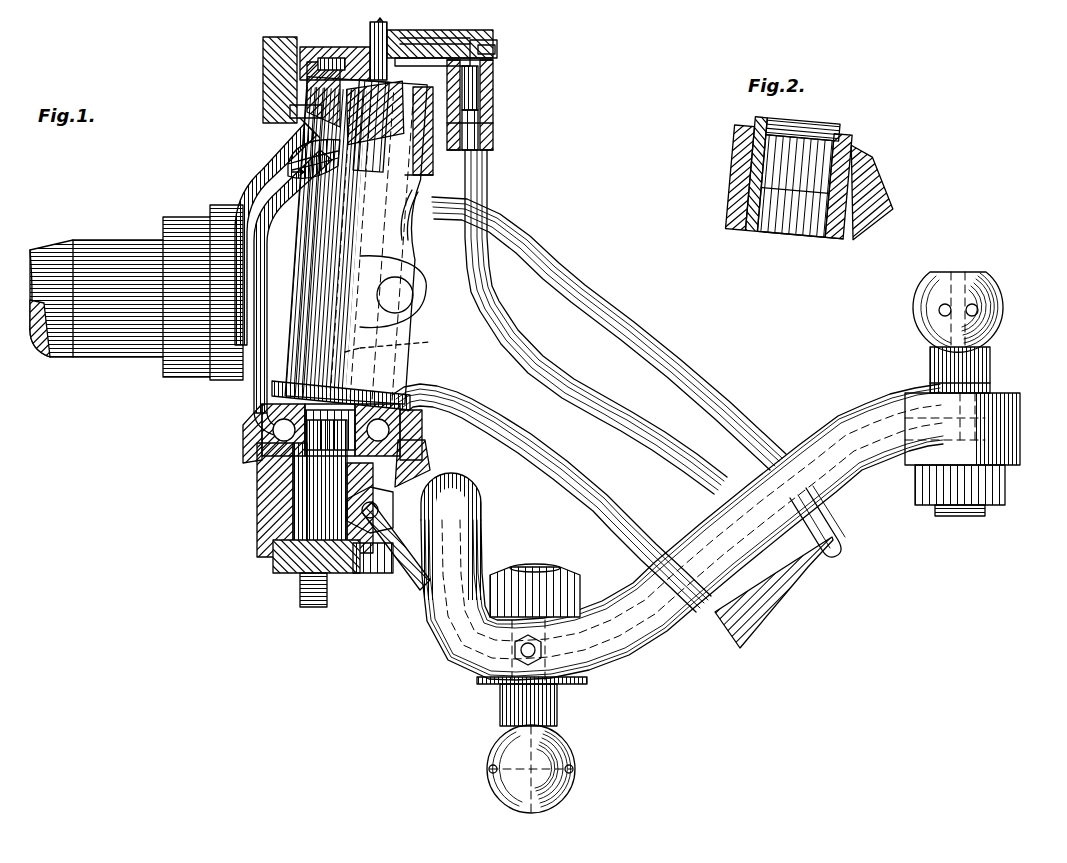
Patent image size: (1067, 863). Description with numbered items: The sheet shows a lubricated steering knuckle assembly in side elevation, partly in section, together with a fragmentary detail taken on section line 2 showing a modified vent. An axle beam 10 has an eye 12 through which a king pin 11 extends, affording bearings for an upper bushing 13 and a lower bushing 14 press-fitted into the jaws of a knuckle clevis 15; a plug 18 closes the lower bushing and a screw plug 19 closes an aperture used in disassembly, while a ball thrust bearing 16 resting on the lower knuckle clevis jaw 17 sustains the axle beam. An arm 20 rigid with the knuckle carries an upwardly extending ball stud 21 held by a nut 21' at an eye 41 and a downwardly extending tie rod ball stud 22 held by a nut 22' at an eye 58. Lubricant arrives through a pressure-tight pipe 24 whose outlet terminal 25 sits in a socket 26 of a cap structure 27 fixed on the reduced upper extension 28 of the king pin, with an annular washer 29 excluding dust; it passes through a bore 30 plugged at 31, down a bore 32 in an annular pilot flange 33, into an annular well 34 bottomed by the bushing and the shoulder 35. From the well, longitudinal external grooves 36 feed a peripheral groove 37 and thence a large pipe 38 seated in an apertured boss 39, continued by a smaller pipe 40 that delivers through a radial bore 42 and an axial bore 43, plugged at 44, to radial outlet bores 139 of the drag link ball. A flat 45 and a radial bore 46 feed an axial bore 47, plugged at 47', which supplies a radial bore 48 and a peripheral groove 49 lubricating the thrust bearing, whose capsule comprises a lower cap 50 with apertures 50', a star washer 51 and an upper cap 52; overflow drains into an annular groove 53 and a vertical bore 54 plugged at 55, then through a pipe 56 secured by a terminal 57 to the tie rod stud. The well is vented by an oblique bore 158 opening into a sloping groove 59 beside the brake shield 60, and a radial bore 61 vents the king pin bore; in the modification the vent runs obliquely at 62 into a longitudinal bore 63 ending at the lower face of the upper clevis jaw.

In FIG. 1, the section line 2 is at (339, 99).
In FIG. 1, the axle beam 10 is at (615, 339).
In FIG. 1, the king pin 11 is at (398, 340).
In FIG. 1, the eye 12 is at (243, 380).
In FIG. 1, the bushing 13 is at (305, 128).
In FIG. 1, the bushing 14 is at (320, 535).
In FIG. 1, the knuckle clevis 15 is at (245, 172).
In FIG. 1, the ball thrust bearing 16 is at (395, 420).
In FIG. 1, the lower knuckle clevis jaw 17 is at (290, 492).
In FIG. 1, the plug 18 is at (300, 575).
In FIG. 1, the screw plug 19 is at (312, 588).
In FIG. 1, the arm 20 is at (446, 668).
In FIG. 1, the ball stud 21 is at (938, 366).
In FIG. 1, the nut 21' is at (938, 510).
In FIG. 1, the ball stud 22 is at (528, 748).
In FIG. 1, the nut 22' is at (535, 590).
In FIG. 1, the pressure-tight pipe 24 is at (488, 250).
In FIG. 1, the outlet terminal 25 is at (493, 112).
In FIG. 1, the socket 26 is at (493, 96).
In FIG. 1, the cap structure 27 is at (468, 44).
In FIG. 1, the reduced upper extension 28 is at (430, 46).
In FIG. 1, the annular washer 29 is at (318, 50).
In FIG. 1, the bore 30 is at (495, 43).
In FIG. 1, the plug 31 is at (497, 52).
In FIG. 1, the bore 32 is at (494, 82).
In FIG. 1, the annular pilot flange 33 is at (332, 58).
In FIG. 1, the annular well 34 is at (420, 140).
In FIG. 1, the shoulder 35 is at (418, 168).
In FIG. 2, the longitudinal external grooves 36 is at (852, 136).
In FIG. 2, the peripheral groove 37 is at (775, 192).
In FIG. 1, the pipe 38 is at (268, 214).
In FIG. 1, the apertured boss 39 is at (300, 151).
In FIG. 2, the apertured boss 39 is at (874, 193).
In FIG. 1, the pipe 40 is at (428, 590).
In FIG. 1, the eye 41 is at (1012, 410).
In FIG. 1, the radial bore 42 is at (935, 412).
In FIG. 1, the axial bore 43 is at (982, 402).
In FIG. 1, the plug 44 is at (962, 270).
In FIG. 1, the flat 45 is at (412, 195).
In FIG. 1, the radial bore 46 is at (418, 218).
In FIG. 1, the axial bore 47 is at (393, 349).
In FIG. 1, the plug 47' is at (435, 29).
In FIG. 1, the radial bore 48 is at (262, 455).
In FIG. 1, the peripheral groove 49 is at (380, 420).
In FIG. 1, the lower cap 50 is at (252, 433).
In FIG. 1, the apertures 50' is at (636, 540).
In FIG. 1, the star washer 51 is at (350, 505).
In FIG. 1, the upper cap 52 is at (272, 398).
In FIG. 1, the annular groove 53 is at (297, 500).
In FIG. 1, the vertical bore 54 is at (420, 462).
In FIG. 1, the plug 55 is at (372, 566).
In FIG. 1, the pipe 56 is at (420, 575).
In FIG. 1, the terminal 57 is at (378, 508).
In FIG. 1, the eye 58 is at (568, 668).
In FIG. 1, the groove 59 is at (335, 96).
In FIG. 1, the brake shield 60 is at (263, 55).
In FIG. 1, the radial bore 61 is at (370, 47).
In FIG. 2, the venting bore 62 is at (753, 128).
In FIG. 2, the longitudinal bore 63 is at (742, 176).
In FIG. 1, the radial outlet bores 139 is at (975, 308).
In FIG. 1, the vent bore 158 is at (300, 106).